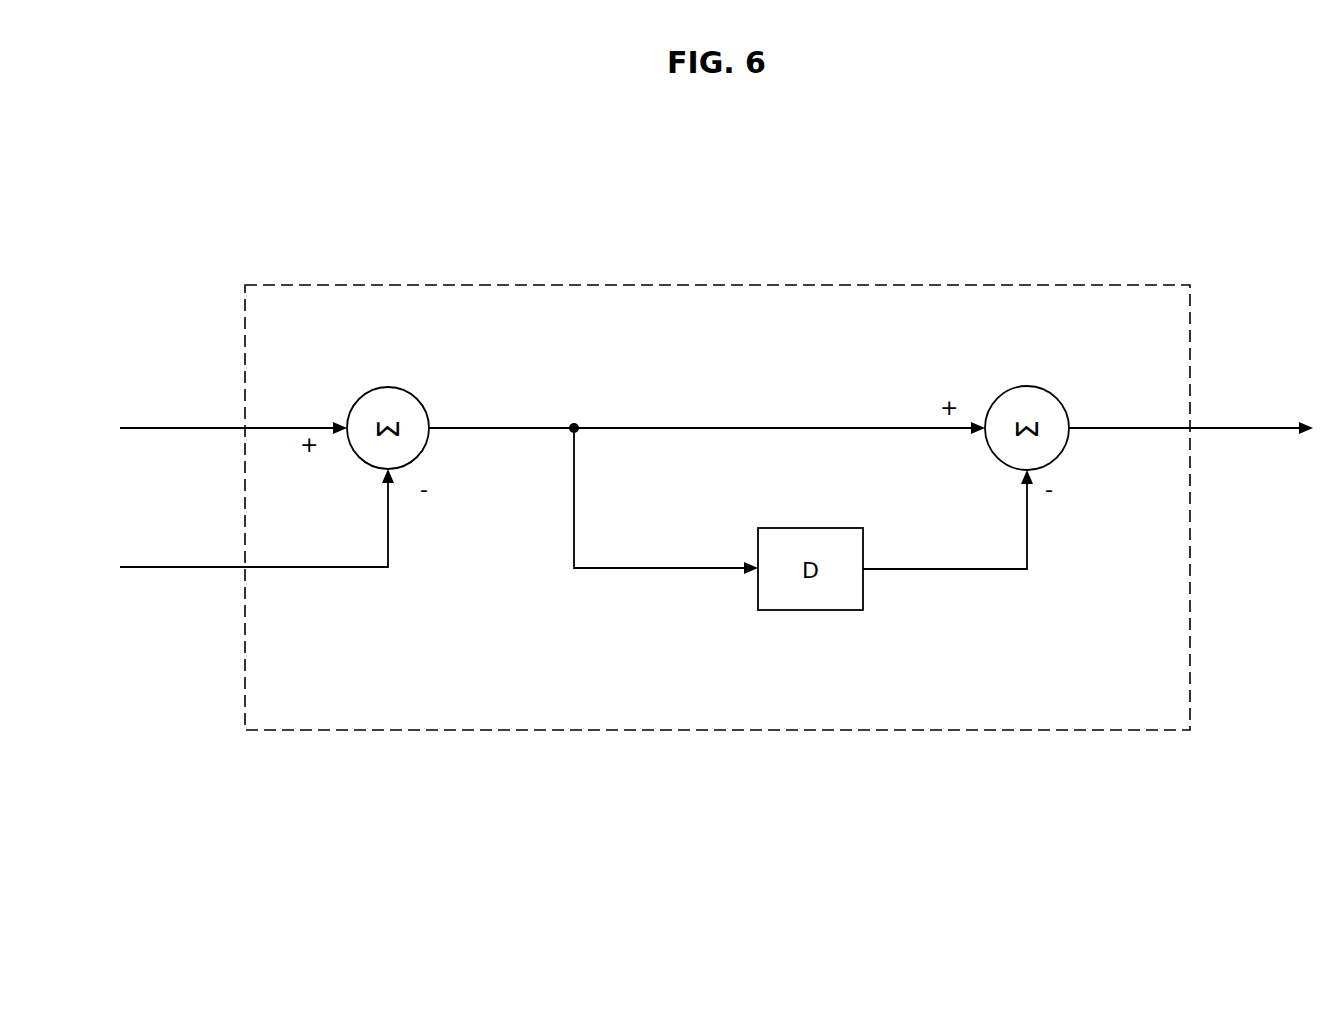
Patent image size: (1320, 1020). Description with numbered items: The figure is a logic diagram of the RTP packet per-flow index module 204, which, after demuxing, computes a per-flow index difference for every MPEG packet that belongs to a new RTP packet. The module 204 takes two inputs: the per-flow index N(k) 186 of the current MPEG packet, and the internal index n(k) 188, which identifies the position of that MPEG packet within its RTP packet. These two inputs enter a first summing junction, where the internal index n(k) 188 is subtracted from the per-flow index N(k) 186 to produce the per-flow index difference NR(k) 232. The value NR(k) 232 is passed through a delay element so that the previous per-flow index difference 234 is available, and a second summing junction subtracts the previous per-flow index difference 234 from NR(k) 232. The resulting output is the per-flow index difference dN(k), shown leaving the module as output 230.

The RTP packet per-flow index module 204 is at (630, 683).
The per-flow index N(k) 186 is at (140, 428).
The internal index n(k) 188 is at (142, 567).
The per-flow index difference NR(k) 232 is at (553, 428).
The previous per-flow index difference NR(k-1) 234 is at (1007, 569).
The differentiated noise dN(k) output 230 is at (1270, 418).